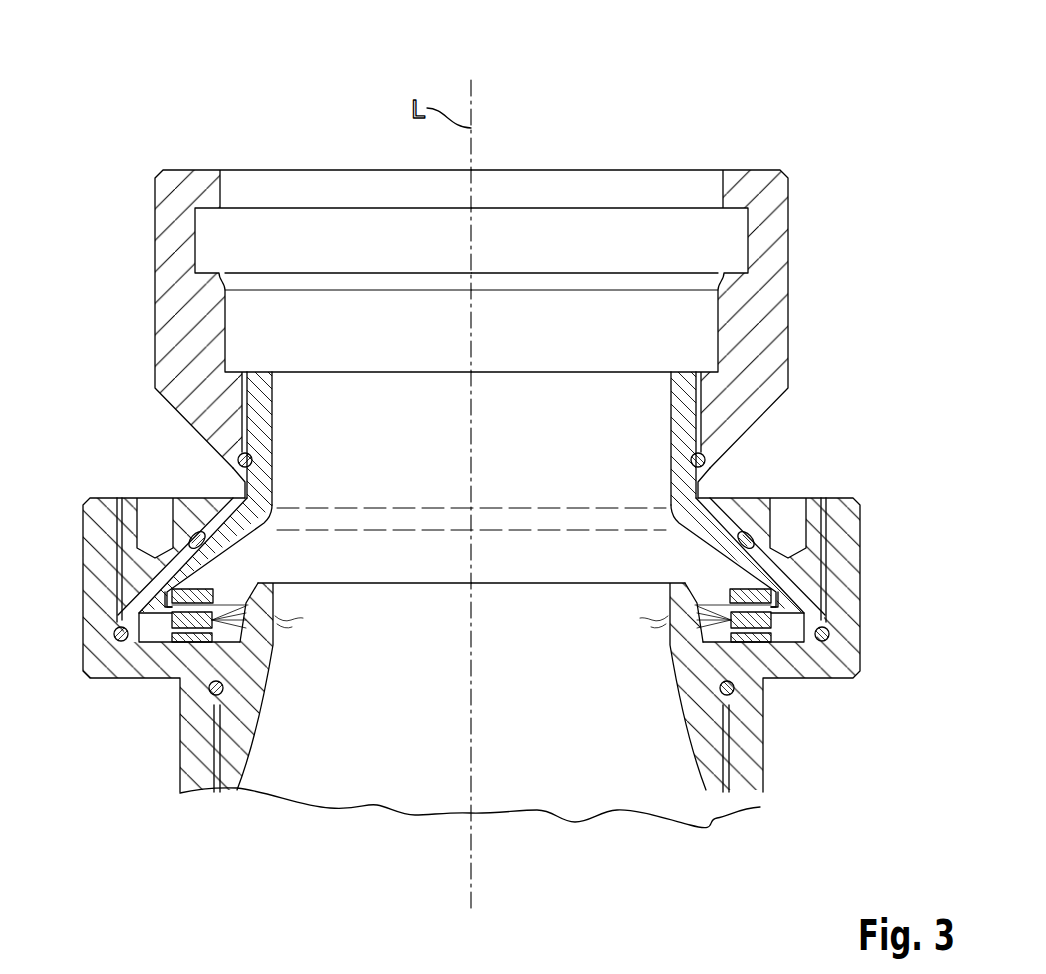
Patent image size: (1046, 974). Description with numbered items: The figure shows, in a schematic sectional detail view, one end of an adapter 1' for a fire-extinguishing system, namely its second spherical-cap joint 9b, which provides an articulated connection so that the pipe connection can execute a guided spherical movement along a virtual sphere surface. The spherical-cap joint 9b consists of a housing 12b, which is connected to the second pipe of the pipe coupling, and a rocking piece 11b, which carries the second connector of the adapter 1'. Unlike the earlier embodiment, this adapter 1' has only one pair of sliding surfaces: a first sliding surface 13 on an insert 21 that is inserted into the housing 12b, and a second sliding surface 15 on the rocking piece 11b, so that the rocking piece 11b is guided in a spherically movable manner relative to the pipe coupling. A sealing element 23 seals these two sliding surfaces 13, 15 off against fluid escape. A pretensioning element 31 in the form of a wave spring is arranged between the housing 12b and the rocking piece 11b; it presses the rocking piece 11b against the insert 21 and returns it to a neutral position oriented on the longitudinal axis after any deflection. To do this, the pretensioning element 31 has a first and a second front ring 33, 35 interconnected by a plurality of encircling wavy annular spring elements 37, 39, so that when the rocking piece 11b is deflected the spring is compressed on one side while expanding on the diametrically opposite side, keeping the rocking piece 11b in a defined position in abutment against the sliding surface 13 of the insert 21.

The adapter 1' is at (494, 420).
The second spherical-cap joint 9b is at (87, 711).
The rocking piece 11b is at (252, 423).
The housing 12b is at (845, 658).
The first sliding surface 13 is at (780, 567).
The second sliding surface 15 is at (717, 510).
The insert 21 is at (760, 520).
The sealing element 23 is at (826, 537).
The pretensioning element 31 is at (788, 632).
The first front ring 33 is at (762, 592).
The second front ring 35 is at (750, 648).
The wavy annular spring element 37 is at (250, 637).
The wavy annular spring element 39 is at (250, 612).